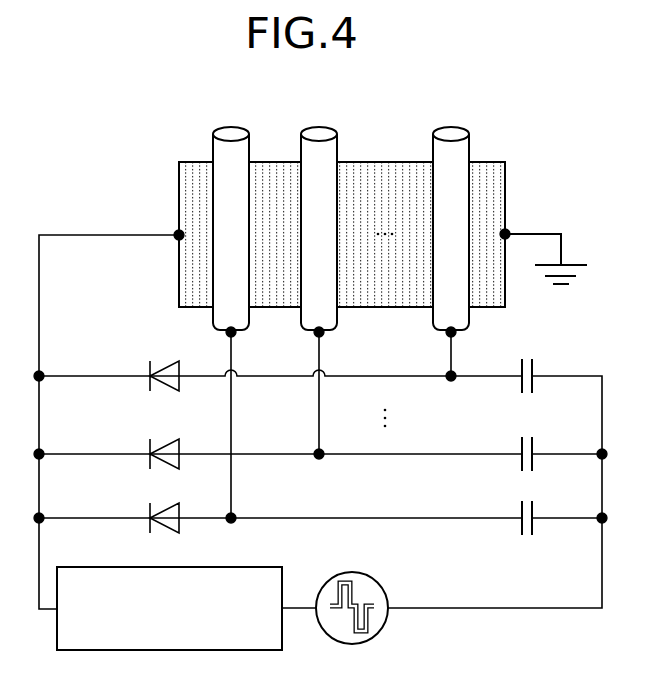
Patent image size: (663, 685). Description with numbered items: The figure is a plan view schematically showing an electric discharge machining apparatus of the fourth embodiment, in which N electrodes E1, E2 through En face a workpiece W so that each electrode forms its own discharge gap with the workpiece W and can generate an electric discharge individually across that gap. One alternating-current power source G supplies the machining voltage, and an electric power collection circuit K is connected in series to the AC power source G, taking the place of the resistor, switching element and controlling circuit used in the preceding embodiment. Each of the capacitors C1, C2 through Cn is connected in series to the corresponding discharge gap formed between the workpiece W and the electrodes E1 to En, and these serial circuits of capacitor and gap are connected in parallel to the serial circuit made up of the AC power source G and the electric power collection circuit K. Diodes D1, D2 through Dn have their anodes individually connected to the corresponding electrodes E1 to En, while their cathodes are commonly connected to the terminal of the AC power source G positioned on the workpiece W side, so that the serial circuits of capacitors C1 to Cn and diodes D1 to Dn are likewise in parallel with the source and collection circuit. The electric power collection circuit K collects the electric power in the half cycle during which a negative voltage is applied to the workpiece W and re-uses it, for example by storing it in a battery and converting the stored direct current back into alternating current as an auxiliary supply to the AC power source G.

The workpiece W is at (179, 178).
The electrode E1 is at (231, 126).
The electrode E2 is at (319, 126).
The electrode En is at (451, 126).
The diode Dn is at (182, 368).
The diode D2 is at (182, 451).
The diode D1 is at (182, 515).
The capacitor Cn is at (535, 367).
The capacitor C2 is at (535, 450).
The capacitor C1 is at (535, 514).
The electric power collection circuit K is at (222, 567).
The AC power source G is at (378, 580).